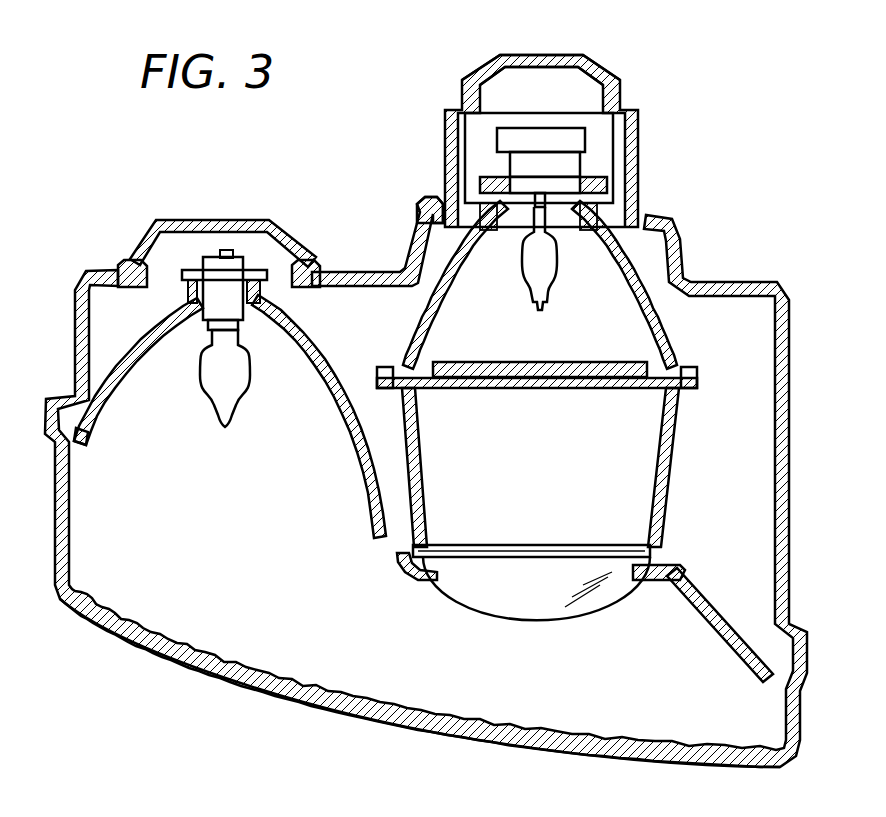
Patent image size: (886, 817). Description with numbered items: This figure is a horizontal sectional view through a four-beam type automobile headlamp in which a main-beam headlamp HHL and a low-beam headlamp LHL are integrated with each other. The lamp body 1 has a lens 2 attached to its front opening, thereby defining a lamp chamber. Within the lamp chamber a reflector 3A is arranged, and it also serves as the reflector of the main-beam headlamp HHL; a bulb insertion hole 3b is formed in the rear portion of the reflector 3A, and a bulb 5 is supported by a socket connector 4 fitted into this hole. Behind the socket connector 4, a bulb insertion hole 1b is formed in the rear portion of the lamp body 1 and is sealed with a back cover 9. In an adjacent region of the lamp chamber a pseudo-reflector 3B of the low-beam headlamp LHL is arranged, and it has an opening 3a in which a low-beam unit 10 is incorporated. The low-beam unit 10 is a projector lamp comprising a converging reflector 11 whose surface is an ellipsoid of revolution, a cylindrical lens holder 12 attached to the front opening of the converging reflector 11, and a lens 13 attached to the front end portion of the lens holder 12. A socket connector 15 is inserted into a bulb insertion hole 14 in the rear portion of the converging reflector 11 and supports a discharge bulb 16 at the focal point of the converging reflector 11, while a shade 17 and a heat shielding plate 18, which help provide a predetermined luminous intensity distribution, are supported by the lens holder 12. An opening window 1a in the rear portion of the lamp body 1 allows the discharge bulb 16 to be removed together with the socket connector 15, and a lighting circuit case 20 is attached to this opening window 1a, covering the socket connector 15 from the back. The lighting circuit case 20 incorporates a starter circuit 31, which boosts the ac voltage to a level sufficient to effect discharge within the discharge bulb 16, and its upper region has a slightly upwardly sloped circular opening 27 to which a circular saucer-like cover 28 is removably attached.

The lamp body 1 is at (426, 473).
The opening window 1a is at (418, 207).
The bulb insertion hole 1b is at (123, 272).
The lens 2 is at (150, 655).
The reflector 3A is at (120, 362).
The pseudo-reflector 3B is at (725, 580).
The opening 3a is at (640, 585).
The bulb insertion hole 3b is at (263, 237).
The socket connector 4 is at (213, 258).
The bulb 5 is at (213, 360).
The back cover 9 is at (158, 228).
The low-beam unit 10 is at (605, 428).
The converging reflector 11 is at (667, 332).
The lens holder 12 is at (660, 500).
The lens 13 is at (480, 587).
The bulb insertion hole 14 is at (587, 178).
The socket connector 15 is at (522, 163).
The discharge bulb 16 is at (548, 258).
The shade 17 is at (570, 386).
The heat shielding plate 18 is at (585, 370).
The lighting circuit case 20 is at (568, 128).
The circular opening 27 is at (552, 98).
The cover 28 is at (567, 55).
The starter circuit 31 is at (477, 130).
The main-beam headlamp HHL is at (108, 645).
The low-beam headlamp LHL is at (555, 766).